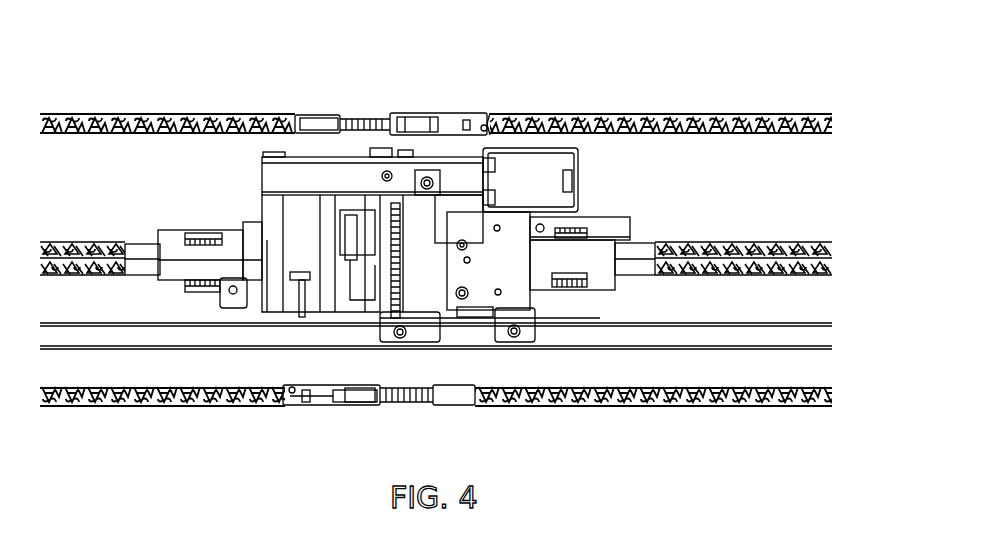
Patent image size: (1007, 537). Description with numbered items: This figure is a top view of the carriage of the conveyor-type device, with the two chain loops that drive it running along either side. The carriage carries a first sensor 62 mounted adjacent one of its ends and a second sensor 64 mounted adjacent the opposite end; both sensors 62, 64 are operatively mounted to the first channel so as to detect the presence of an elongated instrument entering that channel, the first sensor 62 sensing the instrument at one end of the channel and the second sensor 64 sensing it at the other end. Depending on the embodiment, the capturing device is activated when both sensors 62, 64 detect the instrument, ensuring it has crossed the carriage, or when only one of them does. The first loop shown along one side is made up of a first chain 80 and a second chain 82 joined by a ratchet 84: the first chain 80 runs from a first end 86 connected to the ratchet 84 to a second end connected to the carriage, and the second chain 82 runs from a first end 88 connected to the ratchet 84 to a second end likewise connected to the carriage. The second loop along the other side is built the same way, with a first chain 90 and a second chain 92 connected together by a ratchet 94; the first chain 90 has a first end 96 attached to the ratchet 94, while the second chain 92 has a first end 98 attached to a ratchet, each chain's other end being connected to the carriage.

The first sensor 62 is at (203, 230).
The second sensor 64 is at (585, 282).
The first chain 80 is at (160, 112).
The second chain 82 is at (642, 115).
The ratchet 84 is at (415, 118).
The first end 86 is at (305, 100).
The first end 88 is at (503, 98).
The first chain 90 is at (165, 412).
The second chain 92 is at (610, 408).
The ratchet 94 is at (355, 403).
The first end 96 is at (280, 418).
The first end 98 is at (490, 418).